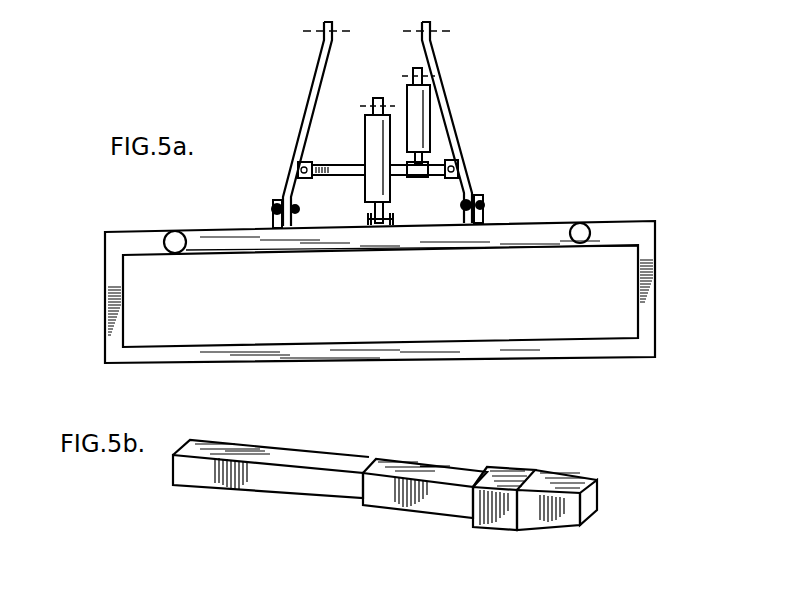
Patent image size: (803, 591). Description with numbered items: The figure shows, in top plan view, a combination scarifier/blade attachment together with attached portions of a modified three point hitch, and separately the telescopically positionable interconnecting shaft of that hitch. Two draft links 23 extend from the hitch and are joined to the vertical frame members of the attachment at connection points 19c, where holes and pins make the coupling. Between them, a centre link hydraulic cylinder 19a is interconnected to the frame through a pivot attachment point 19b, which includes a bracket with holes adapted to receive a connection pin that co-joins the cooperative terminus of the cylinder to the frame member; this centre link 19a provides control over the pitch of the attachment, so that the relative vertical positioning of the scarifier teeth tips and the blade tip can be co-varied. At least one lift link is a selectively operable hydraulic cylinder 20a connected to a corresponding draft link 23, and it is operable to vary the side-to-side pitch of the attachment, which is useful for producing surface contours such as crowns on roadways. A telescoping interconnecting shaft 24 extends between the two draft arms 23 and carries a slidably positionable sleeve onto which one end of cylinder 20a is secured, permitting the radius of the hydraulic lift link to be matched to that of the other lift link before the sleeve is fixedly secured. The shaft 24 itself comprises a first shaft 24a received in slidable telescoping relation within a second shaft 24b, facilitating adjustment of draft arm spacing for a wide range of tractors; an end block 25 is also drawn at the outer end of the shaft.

In FIG. 5A, the draft link 23 is at (312, 100).
In FIG. 5A, the connection points 19c is at (273, 210).
In FIG. 5A, the centre link hydraulic cylinder 19a is at (427, 135).
In FIG. 5A, the pivot attachment point 19b is at (368, 217).
In FIG. 5A, the hydraulic cylinder lift link 20a is at (428, 103).
In FIG. 5A, the telescoping interconnecting shaft 24 is at (342, 164).
In FIG. 5B, the telescoping interconnecting shaft 24 is at (436, 447).
In FIG. 5B, the first shaft 24a is at (287, 457).
In FIG. 5B, the second shaft 24b is at (473, 470).
In FIG. 5B, the end block 25 is at (523, 462).